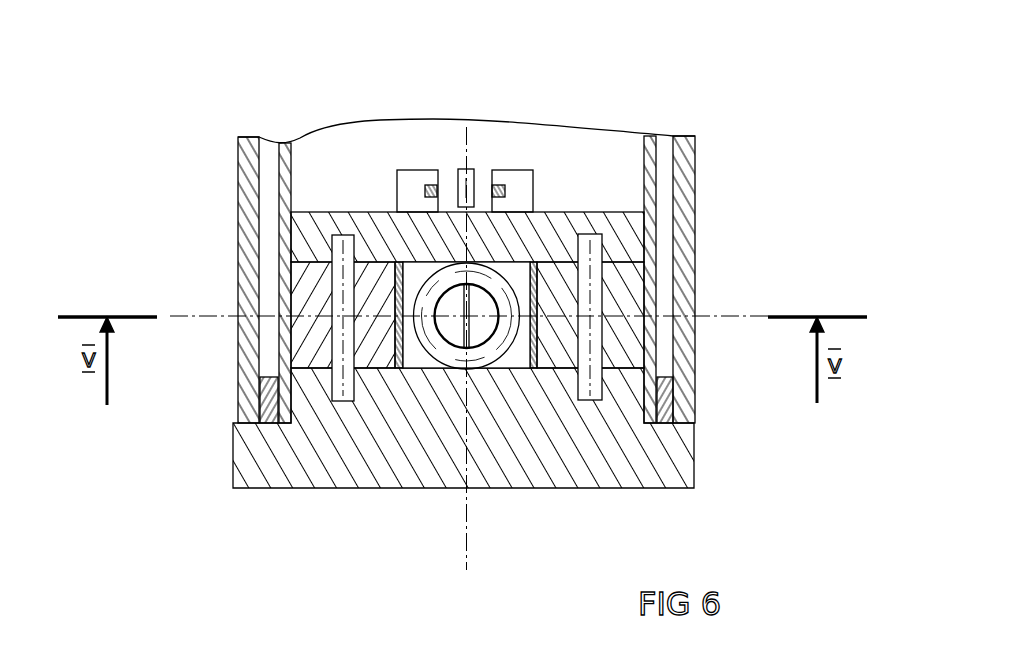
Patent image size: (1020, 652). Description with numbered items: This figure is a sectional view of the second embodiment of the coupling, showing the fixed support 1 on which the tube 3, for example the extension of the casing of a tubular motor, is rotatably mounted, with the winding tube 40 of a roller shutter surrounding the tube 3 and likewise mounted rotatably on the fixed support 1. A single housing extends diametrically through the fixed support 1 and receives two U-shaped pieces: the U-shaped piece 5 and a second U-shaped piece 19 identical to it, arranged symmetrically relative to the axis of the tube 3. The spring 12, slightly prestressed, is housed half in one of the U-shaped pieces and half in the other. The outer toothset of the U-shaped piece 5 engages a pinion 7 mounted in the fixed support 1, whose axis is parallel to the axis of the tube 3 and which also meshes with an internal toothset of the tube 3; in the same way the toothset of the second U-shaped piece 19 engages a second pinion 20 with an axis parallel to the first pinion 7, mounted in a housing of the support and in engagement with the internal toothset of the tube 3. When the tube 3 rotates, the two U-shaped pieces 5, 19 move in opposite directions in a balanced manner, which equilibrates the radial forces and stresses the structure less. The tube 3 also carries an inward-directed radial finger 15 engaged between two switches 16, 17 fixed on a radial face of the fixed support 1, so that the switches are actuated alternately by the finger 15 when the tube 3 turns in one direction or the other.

The fixed support 1 is at (612, 467).
The tube 3 is at (652, 213).
The U-shaped piece 5 is at (393, 350).
The pinion 7 is at (320, 292).
The spring 12 is at (452, 356).
The radial finger 15 is at (467, 177).
The switch 16 is at (405, 180).
The switch 17 is at (523, 177).
The second U-shaped piece 19 is at (532, 343).
The second pinion 20 is at (632, 322).
The winding tube 40 is at (683, 150).